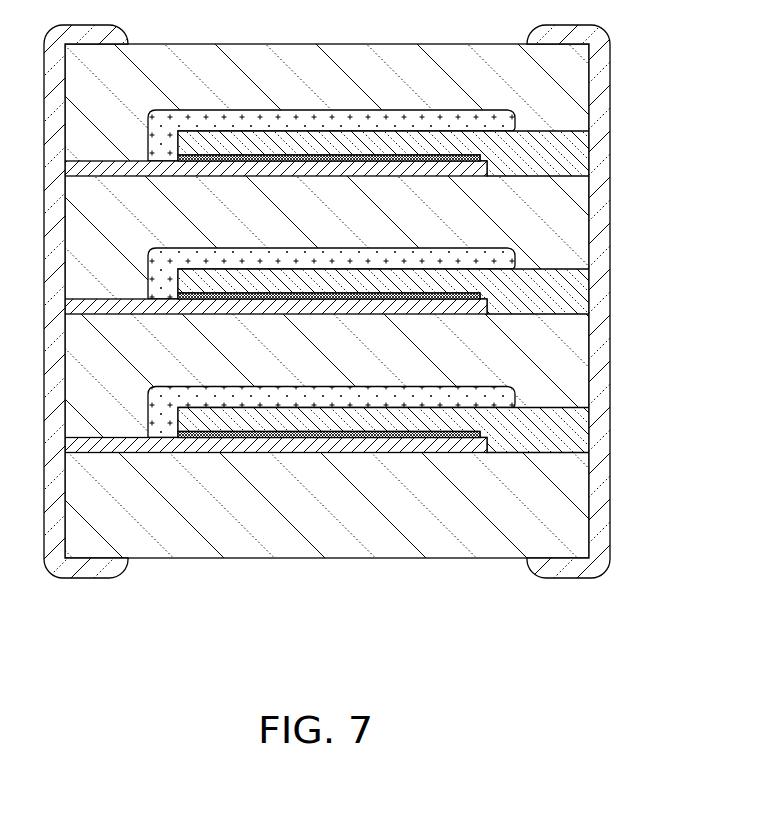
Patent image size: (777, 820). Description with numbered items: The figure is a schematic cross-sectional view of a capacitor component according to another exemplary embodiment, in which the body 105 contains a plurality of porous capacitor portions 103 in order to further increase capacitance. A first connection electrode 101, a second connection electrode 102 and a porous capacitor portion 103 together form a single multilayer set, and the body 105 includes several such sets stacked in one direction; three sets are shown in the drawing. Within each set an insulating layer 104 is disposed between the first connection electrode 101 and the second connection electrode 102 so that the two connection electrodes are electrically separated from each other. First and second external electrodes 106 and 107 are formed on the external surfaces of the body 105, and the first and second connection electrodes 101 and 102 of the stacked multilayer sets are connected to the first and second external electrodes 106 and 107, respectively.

The first connection electrode 101 is at (250, 443).
The second connection electrode 102 is at (570, 432).
The porous capacitor portion 103 is at (515, 398).
The insulating layer 104 is at (415, 435).
The body 105 is at (347, 550).
The first external electrode 106 is at (82, 565).
The second external electrode 107 is at (570, 577).